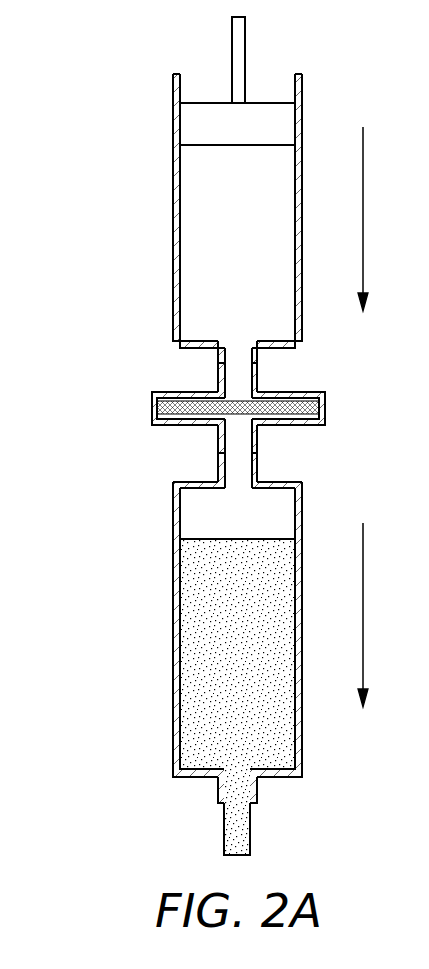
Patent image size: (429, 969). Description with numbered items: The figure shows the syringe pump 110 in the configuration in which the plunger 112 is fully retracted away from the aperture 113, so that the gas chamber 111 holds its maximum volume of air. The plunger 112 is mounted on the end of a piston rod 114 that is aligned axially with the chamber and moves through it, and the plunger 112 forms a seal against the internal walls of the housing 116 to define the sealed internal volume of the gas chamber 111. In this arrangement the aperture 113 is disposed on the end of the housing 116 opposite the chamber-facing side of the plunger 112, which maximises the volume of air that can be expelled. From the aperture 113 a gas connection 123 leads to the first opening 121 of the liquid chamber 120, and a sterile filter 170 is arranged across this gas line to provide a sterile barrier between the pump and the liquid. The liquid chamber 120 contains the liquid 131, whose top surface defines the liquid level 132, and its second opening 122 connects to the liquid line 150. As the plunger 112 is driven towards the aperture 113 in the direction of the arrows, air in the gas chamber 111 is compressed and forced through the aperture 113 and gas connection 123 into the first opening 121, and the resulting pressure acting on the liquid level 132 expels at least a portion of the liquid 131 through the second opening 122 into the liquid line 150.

The syringe pump 110 is at (243, 436).
The gas chamber 111 is at (197, 287).
The plunger 112 is at (196, 128).
The aperture 113 is at (237, 345).
The piston rod 114 is at (232, 35).
The housing 116 is at (173, 215).
The liquid chamber 120 is at (173, 508).
The first opening 121 is at (238, 487).
The second opening 122 is at (237, 772).
The gas connection 123 is at (258, 440).
The liquid 131 is at (197, 690).
The liquid level 132 is at (265, 539).
The liquid line 150 is at (251, 840).
The sterile filter 170 is at (162, 409).